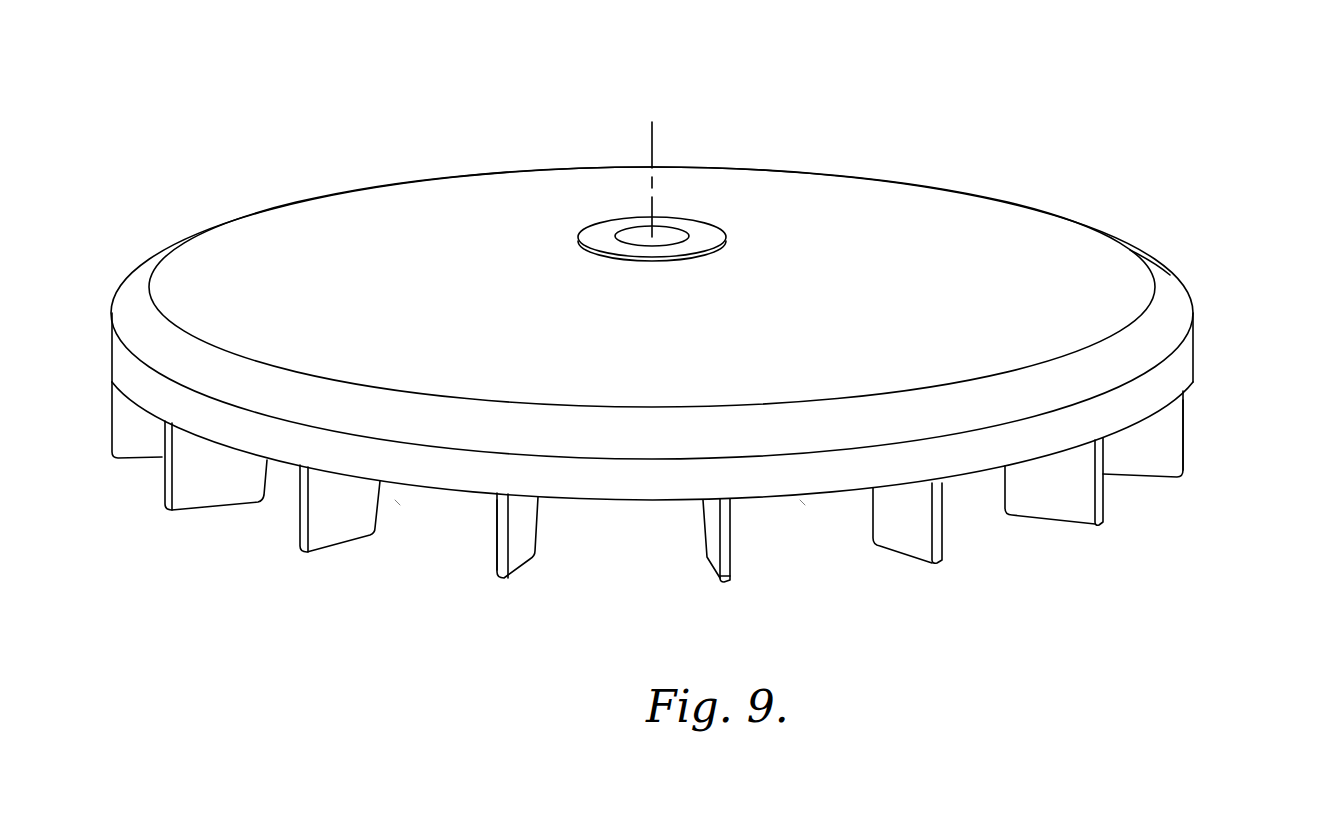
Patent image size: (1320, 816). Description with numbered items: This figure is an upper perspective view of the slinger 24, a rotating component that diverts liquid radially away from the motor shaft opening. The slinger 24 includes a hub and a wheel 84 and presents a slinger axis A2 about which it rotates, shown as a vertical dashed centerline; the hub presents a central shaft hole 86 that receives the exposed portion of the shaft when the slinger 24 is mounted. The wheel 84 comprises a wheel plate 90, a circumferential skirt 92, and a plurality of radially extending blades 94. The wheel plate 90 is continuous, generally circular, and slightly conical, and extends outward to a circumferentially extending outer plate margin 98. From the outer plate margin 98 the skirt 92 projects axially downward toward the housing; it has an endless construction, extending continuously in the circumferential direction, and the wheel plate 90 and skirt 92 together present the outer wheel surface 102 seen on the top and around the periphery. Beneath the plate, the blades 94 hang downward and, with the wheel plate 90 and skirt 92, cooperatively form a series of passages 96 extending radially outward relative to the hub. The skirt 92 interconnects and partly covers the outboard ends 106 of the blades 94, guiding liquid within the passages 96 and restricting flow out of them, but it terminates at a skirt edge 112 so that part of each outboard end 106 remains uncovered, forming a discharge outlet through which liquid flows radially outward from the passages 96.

The slinger 24 is at (1057, 95).
The wheel 84 is at (836, 192).
The shaft hole 86 is at (668, 238).
The wheel plate 90 is at (918, 206).
The circumferential skirt 92 is at (1184, 367).
The radially extending blades 94 is at (318, 515).
The passages 96 is at (413, 513).
The outer plate margin 98 is at (1148, 264).
The outer wheel surface 102 is at (990, 221).
The outboard end 106 is at (498, 554).
The skirt edge 112 is at (640, 500).
The slinger axis A2 is at (653, 139).